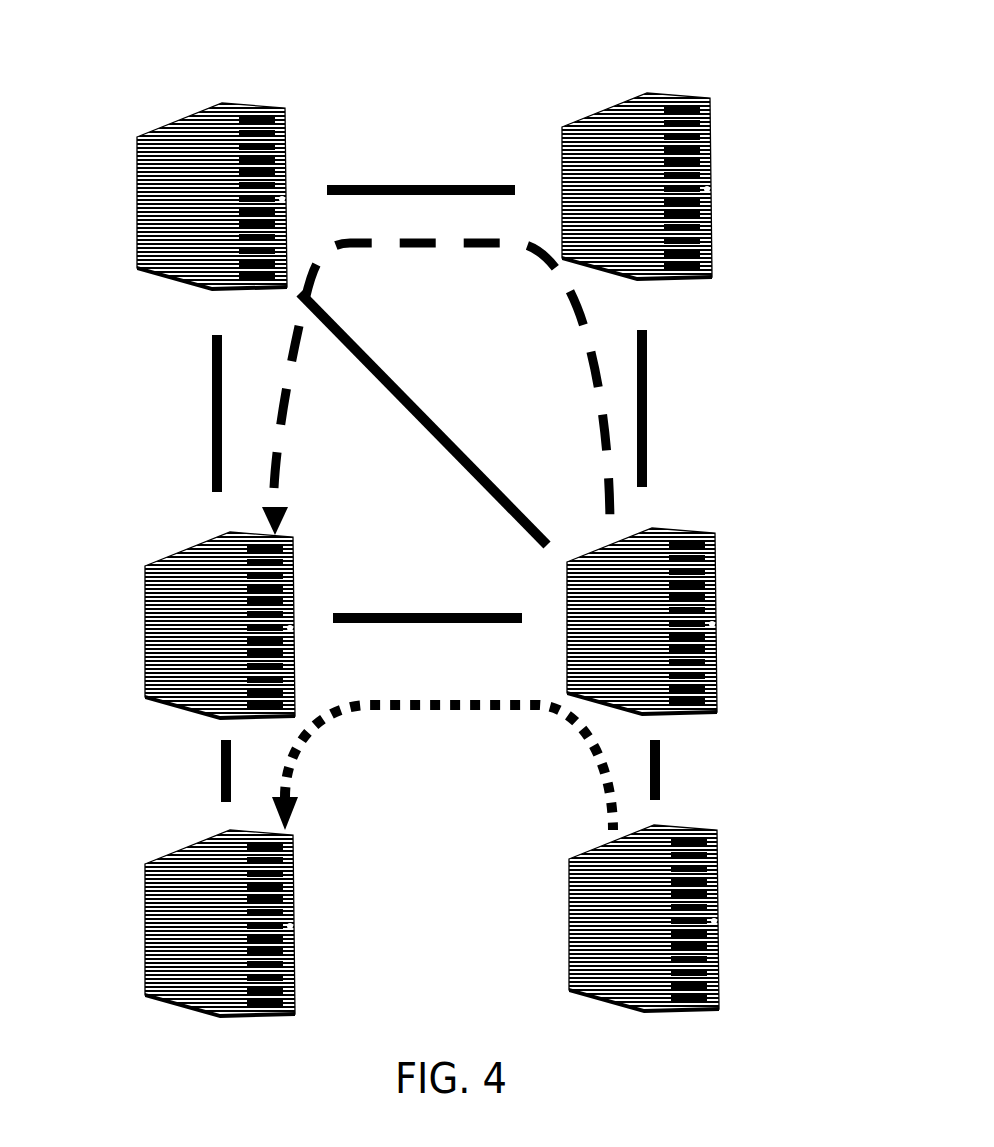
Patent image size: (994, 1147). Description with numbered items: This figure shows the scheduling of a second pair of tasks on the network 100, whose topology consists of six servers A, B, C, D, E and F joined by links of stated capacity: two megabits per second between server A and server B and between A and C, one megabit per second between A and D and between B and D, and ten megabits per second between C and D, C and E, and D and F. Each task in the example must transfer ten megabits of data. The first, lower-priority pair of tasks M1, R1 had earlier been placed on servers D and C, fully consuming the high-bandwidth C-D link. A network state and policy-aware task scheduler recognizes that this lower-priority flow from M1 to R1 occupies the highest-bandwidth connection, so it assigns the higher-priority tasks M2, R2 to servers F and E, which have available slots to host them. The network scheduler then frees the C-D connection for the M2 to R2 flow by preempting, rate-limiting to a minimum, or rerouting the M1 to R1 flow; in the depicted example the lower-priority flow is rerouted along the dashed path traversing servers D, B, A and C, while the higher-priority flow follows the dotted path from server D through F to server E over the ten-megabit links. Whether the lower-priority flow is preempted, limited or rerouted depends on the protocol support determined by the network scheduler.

The network 100 is at (798, 37).
The server A is at (212, 174).
The server B is at (637, 169).
The server C is at (220, 613).
The server D is at (642, 613).
The server E is at (220, 913).
The server F is at (643, 913).
The low-priority reduce task R1 is at (436, 407).
The high-priority reduce task R2 is at (442, 815).
The low-priority map task M1 is at (423, 430).
The high-priority map task M2 is at (580, 832).